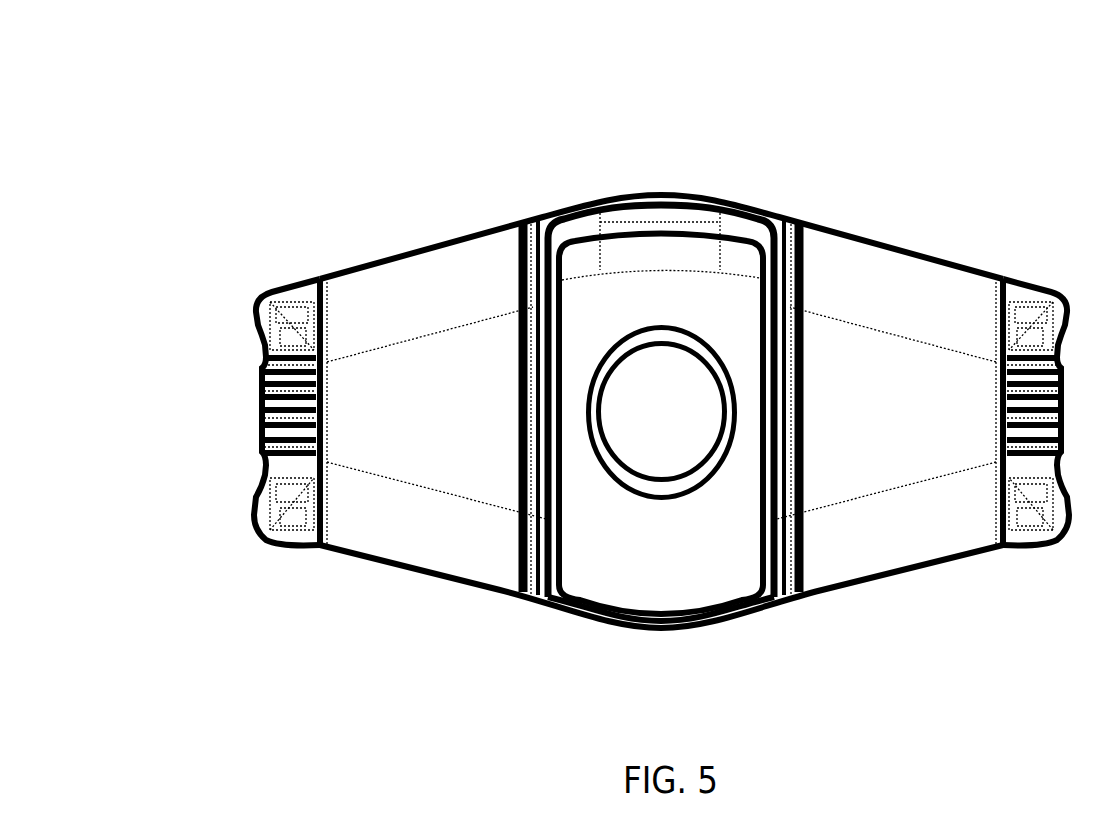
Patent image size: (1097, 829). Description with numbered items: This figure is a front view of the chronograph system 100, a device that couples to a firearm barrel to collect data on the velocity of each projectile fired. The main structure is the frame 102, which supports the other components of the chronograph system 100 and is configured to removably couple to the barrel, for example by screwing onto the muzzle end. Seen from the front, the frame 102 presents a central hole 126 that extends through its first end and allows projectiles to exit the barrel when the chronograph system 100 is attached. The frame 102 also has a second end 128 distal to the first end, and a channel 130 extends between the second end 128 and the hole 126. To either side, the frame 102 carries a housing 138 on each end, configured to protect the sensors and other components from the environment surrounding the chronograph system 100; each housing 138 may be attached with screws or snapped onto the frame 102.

The chronograph system 100 is at (218, 148).
The frame 102 is at (765, 223).
The hole 126 is at (632, 395).
The second end 128 is at (788, 437).
The channel 130 is at (633, 543).
The housing 138 is at (380, 310).